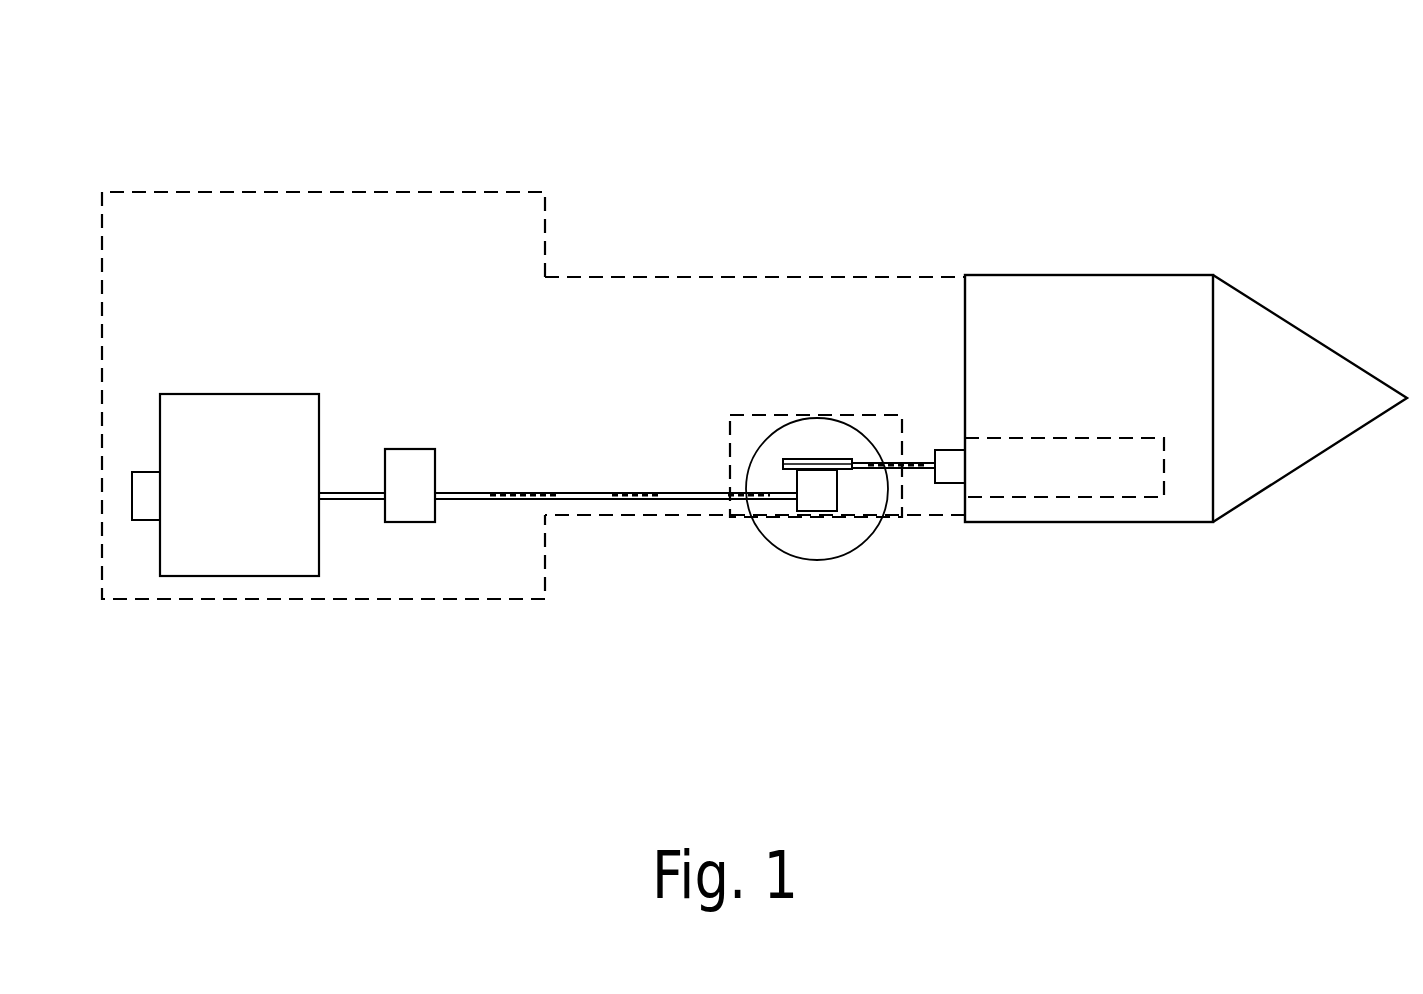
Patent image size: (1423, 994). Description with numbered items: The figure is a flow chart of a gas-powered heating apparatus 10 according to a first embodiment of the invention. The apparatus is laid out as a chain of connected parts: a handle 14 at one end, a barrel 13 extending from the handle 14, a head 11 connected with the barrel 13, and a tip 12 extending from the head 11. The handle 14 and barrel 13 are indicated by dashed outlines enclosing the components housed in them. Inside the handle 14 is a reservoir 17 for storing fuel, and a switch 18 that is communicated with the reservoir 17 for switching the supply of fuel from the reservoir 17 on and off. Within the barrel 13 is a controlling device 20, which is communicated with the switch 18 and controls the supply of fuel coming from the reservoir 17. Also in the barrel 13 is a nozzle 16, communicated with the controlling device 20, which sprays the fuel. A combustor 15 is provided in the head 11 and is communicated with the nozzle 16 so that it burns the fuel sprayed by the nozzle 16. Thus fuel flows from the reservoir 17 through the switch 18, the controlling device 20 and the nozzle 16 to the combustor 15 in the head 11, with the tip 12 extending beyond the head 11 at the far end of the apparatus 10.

The gas-powered heating apparatus 10 is at (795, 170).
The head 11 is at (1127, 300).
The tip 12 is at (1325, 375).
The barrel 13 is at (662, 300).
The handle 14 is at (285, 215).
The combustor 15 is at (1091, 473).
The nozzle 16 is at (950, 485).
The reservoir 17 is at (235, 547).
The switch 18 is at (411, 507).
The controlling device 20 is at (797, 580).